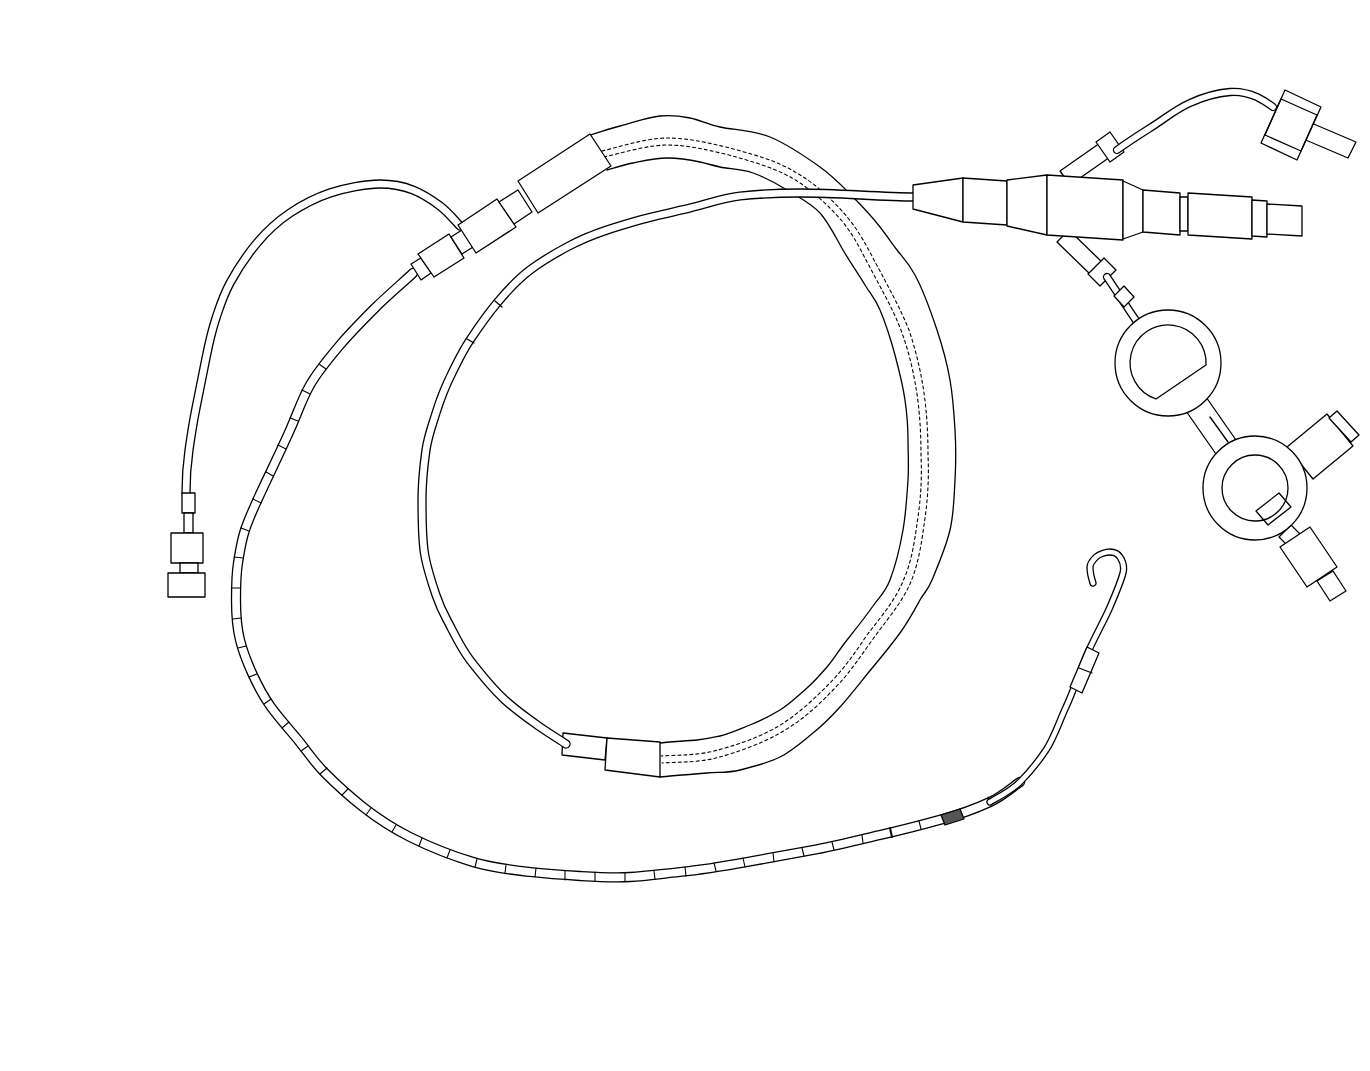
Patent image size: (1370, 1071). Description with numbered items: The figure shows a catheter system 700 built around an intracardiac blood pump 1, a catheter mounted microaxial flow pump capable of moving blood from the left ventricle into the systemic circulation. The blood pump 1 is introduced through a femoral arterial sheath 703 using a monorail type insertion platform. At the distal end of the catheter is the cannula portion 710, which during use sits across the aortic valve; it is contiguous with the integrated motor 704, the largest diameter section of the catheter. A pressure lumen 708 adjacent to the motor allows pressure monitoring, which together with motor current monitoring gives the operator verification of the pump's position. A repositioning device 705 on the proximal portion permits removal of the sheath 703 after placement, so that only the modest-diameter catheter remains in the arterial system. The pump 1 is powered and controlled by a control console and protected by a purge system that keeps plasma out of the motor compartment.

The catheter system 700 is at (190, 55).
The femoral arterial sheath 703 is at (563, 137).
The repositioning device 705 is at (458, 199).
The pressure lumen 708 is at (887, 811).
The integrated motor 704 is at (924, 808).
The intracardiac blood pump 1 is at (641, 577).
The cannula portion 710 is at (1112, 723).